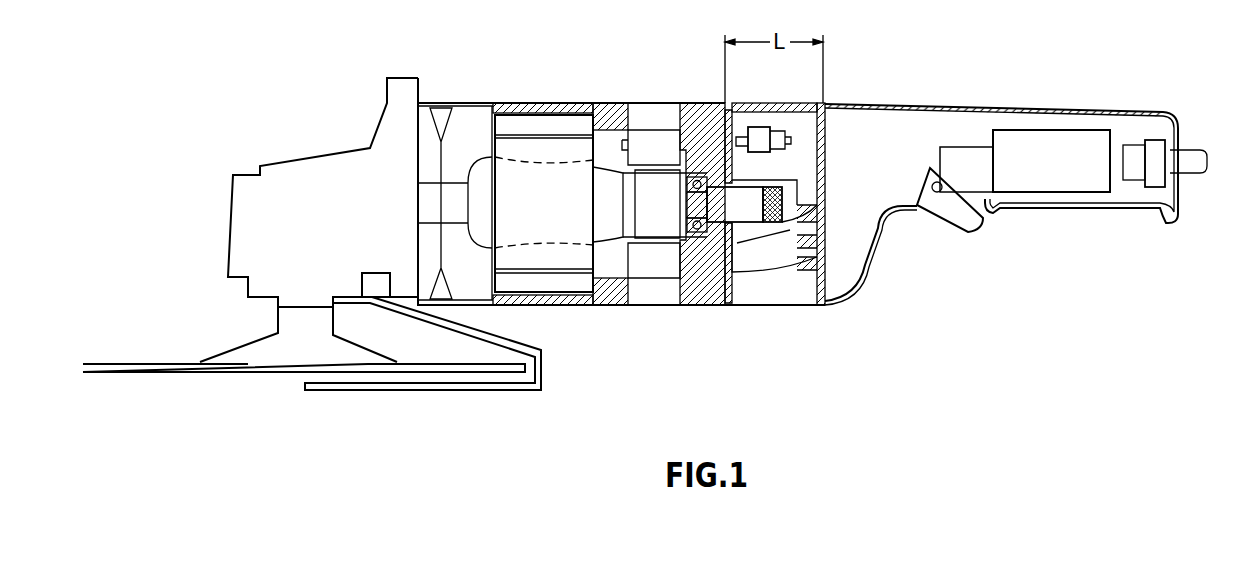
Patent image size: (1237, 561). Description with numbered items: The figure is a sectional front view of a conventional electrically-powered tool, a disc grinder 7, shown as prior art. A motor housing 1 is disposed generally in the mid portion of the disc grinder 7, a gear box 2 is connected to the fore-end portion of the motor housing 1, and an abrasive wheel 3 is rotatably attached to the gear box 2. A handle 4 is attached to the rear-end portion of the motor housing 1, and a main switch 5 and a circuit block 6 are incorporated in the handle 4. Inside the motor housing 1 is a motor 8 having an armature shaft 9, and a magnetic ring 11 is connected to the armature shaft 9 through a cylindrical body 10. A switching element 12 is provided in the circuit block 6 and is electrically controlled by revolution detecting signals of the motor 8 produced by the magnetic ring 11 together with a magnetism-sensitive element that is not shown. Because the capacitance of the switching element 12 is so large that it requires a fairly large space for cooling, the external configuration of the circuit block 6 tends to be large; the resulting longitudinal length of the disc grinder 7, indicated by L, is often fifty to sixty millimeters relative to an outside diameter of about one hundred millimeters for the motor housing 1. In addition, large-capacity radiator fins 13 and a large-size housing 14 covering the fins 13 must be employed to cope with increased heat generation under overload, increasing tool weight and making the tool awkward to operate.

The motor housing 1 is at (612, 297).
The gear box 2 is at (298, 165).
The abrasive wheel 3 is at (131, 363).
The handle 4 is at (942, 110).
The main switch 5 is at (1061, 180).
The circuit block 6 is at (830, 108).
The disc grinder 7 is at (636, 83).
The motor 8 is at (548, 237).
The armature shaft 9 is at (688, 205).
The cylindrical body 10 is at (742, 218).
The magnetic ring 11 is at (791, 232).
The switching element 12 is at (758, 122).
The radiator fins 13 is at (778, 258).
The housing 14 is at (782, 104).